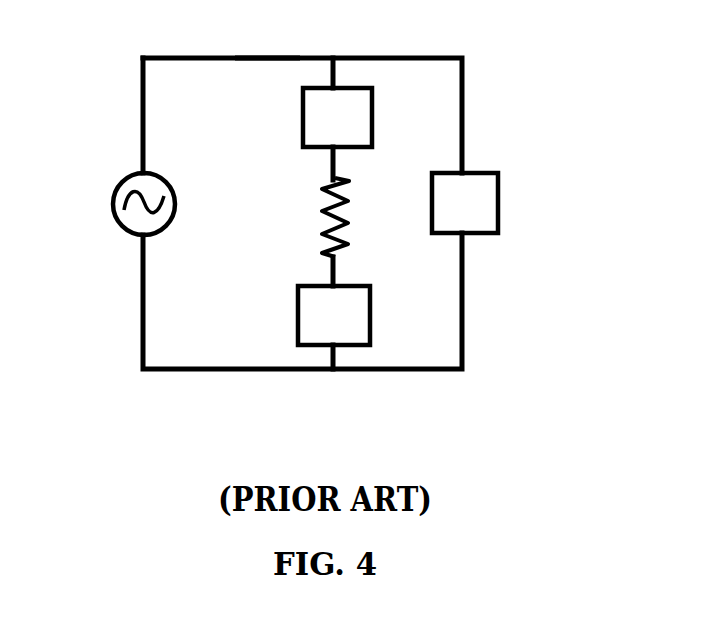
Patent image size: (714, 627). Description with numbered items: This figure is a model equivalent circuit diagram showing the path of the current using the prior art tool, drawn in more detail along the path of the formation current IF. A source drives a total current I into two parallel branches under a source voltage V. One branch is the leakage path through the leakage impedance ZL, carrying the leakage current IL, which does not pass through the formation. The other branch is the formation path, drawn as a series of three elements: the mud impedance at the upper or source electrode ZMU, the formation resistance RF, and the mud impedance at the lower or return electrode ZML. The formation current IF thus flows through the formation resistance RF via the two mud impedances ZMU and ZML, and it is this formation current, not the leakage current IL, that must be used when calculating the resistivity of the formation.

The voltage V is at (207, 363).
The current I is at (235, 42).
The mud impedance at the upper or source electrode ZMU is at (337, 117).
The mud impedance at the lower or return electrode ZML is at (334, 315).
The leakage impedance ZL is at (465, 203).
The formation resistance RF is at (310, 217).
The formation current IF is at (362, 198).
The leakage current IL is at (473, 240).